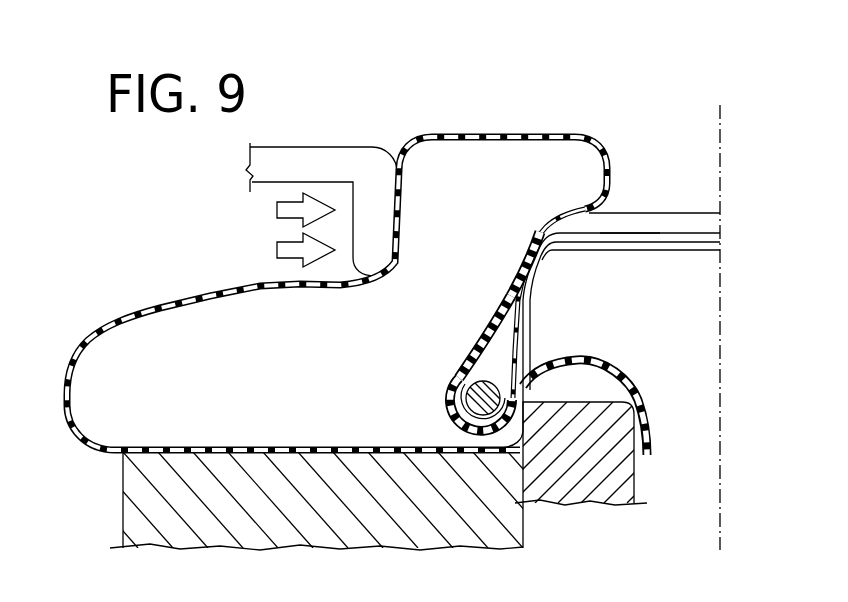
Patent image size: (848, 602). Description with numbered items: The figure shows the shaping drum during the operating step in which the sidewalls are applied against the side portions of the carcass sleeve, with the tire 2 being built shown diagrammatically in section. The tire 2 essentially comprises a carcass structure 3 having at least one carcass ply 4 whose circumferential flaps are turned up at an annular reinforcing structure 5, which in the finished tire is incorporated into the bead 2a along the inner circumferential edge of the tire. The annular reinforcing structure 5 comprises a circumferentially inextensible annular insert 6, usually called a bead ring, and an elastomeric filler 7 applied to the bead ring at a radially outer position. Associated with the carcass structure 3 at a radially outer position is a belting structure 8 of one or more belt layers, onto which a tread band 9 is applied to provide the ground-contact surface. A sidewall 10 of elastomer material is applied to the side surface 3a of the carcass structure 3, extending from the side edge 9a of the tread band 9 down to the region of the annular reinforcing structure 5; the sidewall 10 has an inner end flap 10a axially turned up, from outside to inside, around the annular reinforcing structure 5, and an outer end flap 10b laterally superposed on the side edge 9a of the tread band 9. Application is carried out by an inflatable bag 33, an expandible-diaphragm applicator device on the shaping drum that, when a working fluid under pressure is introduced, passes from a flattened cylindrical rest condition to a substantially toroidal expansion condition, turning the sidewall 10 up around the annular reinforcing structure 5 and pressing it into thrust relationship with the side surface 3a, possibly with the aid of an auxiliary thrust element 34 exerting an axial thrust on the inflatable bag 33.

The tire 2 is at (664, 190).
The bead 2a is at (530, 361).
The carcass structure 3 is at (682, 249).
The side surface of the carcass structure 3a is at (533, 307).
The carcass ply 4 is at (700, 242).
The annular reinforcing structure 5 is at (458, 379).
The annular insert 6 is at (466, 400).
The elastomeric filler 7 is at (478, 358).
The belting structure 8 is at (613, 235).
The tread band 9 is at (690, 222).
The side edge of the tread band 9a is at (547, 232).
The sidewall 10 is at (500, 322).
The inner end flap of the sidewall 10a is at (527, 407).
The outer end flap of the sidewall 10b is at (520, 263).
The inflatable bag 33 is at (447, 134).
The auxiliary thrust element 34 is at (338, 146).